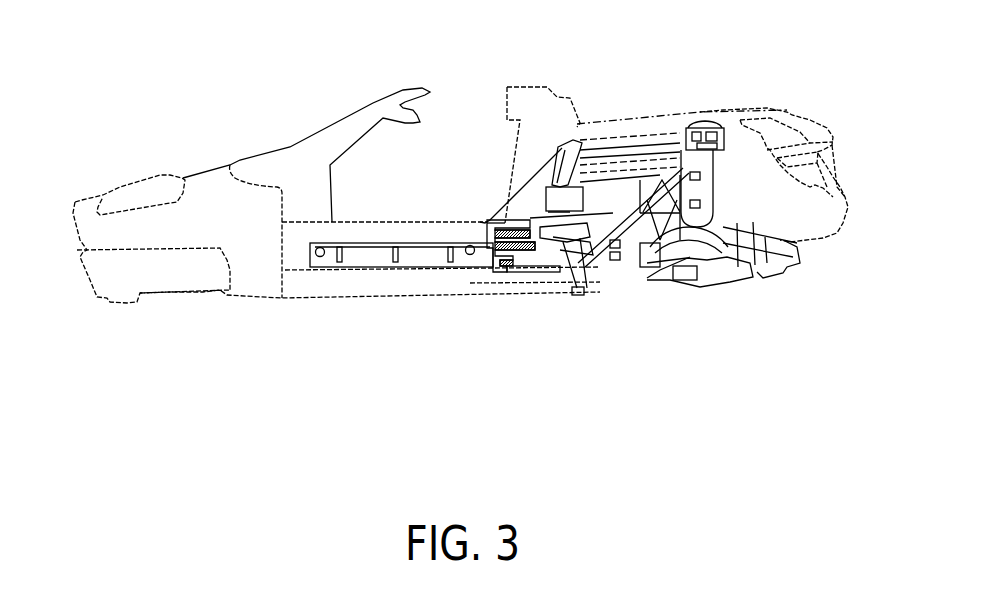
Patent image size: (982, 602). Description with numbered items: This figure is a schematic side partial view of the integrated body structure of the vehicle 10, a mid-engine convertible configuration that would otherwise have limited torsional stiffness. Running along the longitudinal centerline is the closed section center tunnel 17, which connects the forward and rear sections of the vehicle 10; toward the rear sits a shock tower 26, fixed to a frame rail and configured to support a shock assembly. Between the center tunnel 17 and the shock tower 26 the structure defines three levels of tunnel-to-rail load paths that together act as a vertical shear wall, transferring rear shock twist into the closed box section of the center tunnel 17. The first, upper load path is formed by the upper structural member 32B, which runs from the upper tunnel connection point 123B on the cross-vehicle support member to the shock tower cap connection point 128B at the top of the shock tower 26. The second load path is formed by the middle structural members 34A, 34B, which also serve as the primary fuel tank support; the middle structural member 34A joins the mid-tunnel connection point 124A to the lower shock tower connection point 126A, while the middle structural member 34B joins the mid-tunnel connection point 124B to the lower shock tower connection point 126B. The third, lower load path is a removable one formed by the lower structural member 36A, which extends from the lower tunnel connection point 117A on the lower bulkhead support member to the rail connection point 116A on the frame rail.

The vehicle 10 is at (276, 100).
The center tunnel 17 is at (423, 253).
The shock tower 26 is at (712, 132).
The upper structural member 32B is at (637, 150).
The middle structural member 34A is at (578, 296).
The middle structural member 34B is at (580, 206).
The lower structural member 36A is at (520, 273).
The rail connection point 116A is at (555, 272).
The lower tunnel connection point 117A is at (493, 275).
The upper tunnel connection point 123B is at (578, 143).
The mid-tunnel connection point 124A is at (513, 227).
The mid-tunnel connection point 124B is at (537, 227).
The lower shock tower connection point 126A is at (612, 276).
The lower shock tower connection point 126B is at (664, 268).
The shock tower cap connection point 128B is at (680, 137).